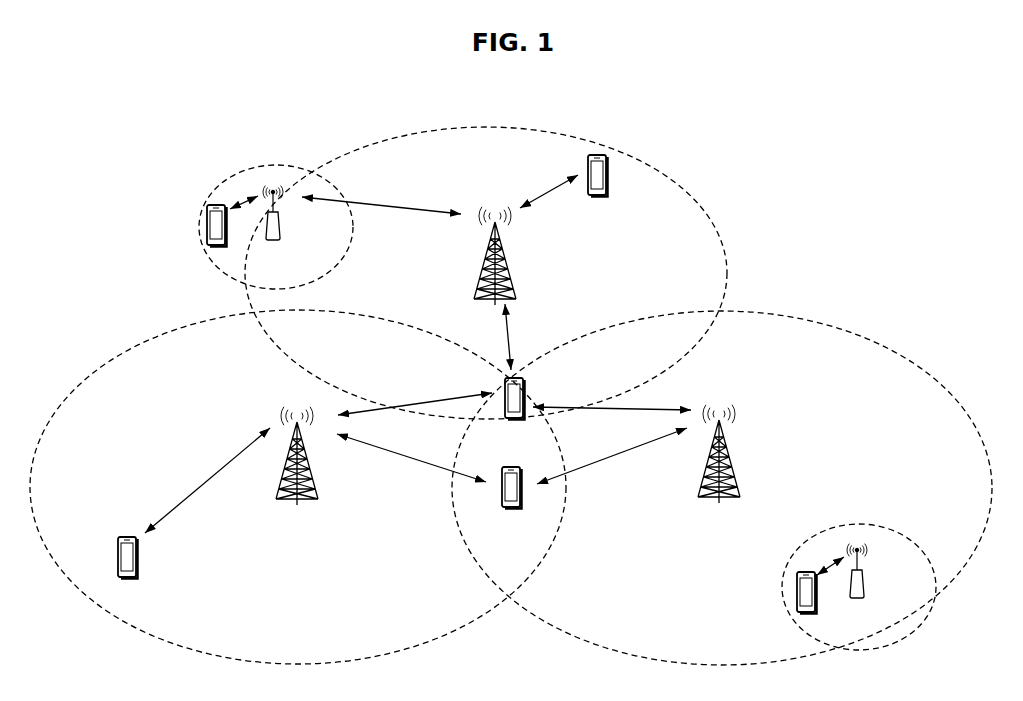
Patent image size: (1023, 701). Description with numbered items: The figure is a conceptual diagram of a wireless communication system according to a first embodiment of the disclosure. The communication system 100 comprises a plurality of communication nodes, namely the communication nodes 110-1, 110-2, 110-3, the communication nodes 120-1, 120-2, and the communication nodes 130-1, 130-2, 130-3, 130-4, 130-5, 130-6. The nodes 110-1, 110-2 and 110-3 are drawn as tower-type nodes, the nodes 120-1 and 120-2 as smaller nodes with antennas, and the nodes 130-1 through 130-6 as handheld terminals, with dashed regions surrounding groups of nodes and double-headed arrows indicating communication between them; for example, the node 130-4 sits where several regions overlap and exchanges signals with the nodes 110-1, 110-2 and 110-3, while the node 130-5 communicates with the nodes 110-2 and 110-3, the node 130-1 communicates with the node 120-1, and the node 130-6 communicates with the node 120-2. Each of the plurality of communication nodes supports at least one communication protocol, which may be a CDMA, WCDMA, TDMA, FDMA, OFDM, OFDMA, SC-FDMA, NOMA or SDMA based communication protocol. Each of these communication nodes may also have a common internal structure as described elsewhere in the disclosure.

The communication system 100 is at (469, 101).
The communication node 110-1 is at (508, 262).
The communication node 110-2 is at (297, 500).
The communication node 110-3 is at (732, 461).
The communication node 120-1 is at (281, 226).
The communication node 120-2 is at (865, 578).
The communication node 130-1 is at (206, 223).
The communication node 130-2 is at (138, 557).
The communication node 130-3 is at (608, 181).
The communication node 130-4 is at (526, 381).
The communication node 130-5 is at (509, 466).
The communication node 130-6 is at (797, 590).